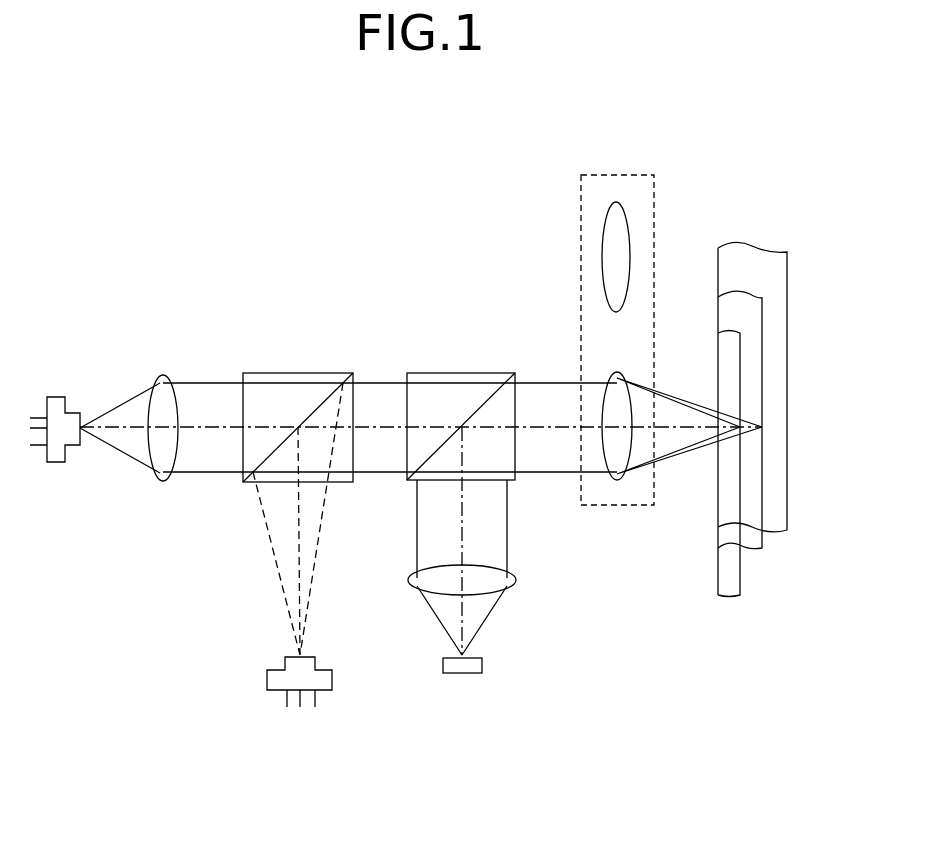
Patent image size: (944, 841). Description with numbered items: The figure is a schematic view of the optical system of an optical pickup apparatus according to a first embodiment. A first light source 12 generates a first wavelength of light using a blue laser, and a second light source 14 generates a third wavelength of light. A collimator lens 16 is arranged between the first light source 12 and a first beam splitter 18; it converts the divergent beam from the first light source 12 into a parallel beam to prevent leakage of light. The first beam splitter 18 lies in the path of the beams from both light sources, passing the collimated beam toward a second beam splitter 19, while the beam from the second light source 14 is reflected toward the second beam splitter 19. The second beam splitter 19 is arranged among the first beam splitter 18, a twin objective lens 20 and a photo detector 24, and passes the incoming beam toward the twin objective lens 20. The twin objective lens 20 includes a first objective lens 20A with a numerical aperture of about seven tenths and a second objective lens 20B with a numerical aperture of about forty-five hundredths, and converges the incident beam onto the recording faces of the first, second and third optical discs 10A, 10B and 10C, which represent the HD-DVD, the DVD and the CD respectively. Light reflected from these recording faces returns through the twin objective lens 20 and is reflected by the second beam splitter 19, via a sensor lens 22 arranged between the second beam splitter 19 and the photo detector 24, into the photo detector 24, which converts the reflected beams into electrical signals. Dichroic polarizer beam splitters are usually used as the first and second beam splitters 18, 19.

The first light source 12 is at (62, 398).
The second light source 14 is at (332, 674).
The collimator lens 16 is at (163, 378).
The first beam splitter 18 is at (350, 373).
The second beam splitter 19 is at (513, 373).
The twin objective lens 20 is at (654, 175).
The first objective lens 20A is at (617, 373).
The second objective lens 20B is at (630, 237).
The sensor lens 22 is at (512, 580).
The photo detector 24 is at (473, 670).
The first optical disc 10A is at (732, 570).
The second optical disc 10B is at (753, 395).
The third optical disc 10C is at (778, 332).